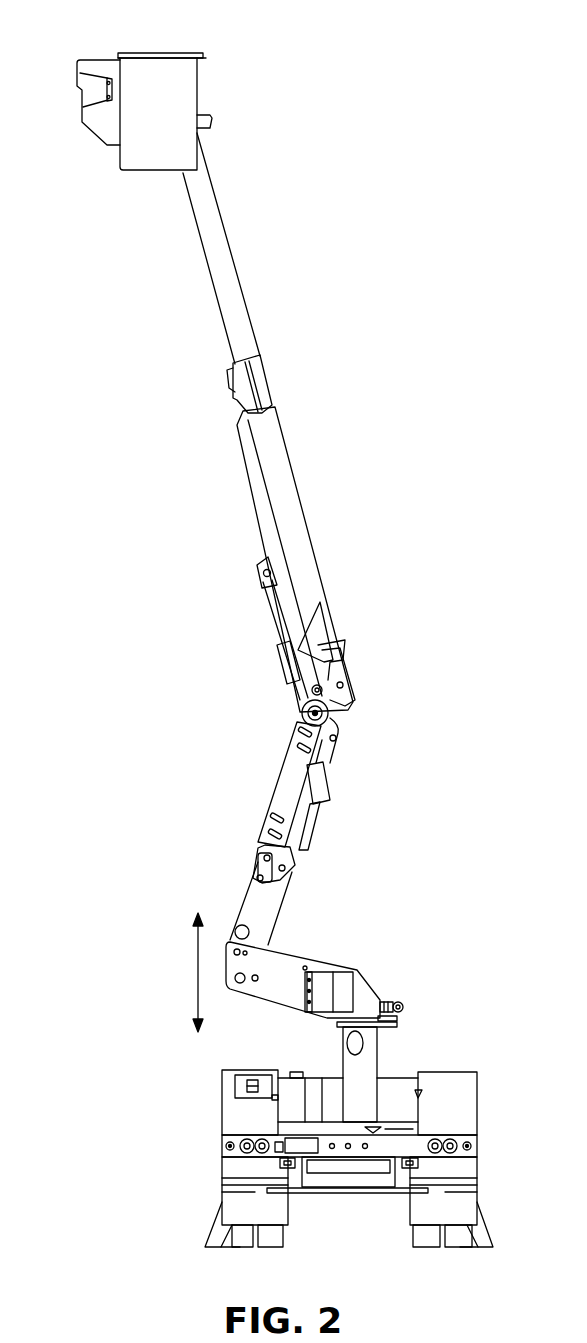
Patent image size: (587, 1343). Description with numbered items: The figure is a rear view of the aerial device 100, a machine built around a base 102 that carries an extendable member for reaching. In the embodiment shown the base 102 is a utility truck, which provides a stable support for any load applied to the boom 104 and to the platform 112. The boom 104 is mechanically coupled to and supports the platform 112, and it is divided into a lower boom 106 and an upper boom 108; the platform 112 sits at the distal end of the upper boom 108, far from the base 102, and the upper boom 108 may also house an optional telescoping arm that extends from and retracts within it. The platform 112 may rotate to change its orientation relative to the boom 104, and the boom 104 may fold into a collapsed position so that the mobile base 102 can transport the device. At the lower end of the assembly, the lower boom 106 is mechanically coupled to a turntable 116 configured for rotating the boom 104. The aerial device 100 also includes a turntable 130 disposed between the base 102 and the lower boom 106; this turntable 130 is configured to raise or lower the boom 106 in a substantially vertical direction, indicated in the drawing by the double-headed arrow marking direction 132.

The aerial device 100 is at (242, 123).
The base 102 is at (206, 1173).
The boom 104 is at (360, 635).
The lower boom 106 is at (280, 776).
The upper boom 108 is at (270, 398).
The platform 112 is at (113, 27).
The turntable 116 is at (401, 1014).
The turntable 130 is at (309, 957).
The direction 132 is at (195, 975).